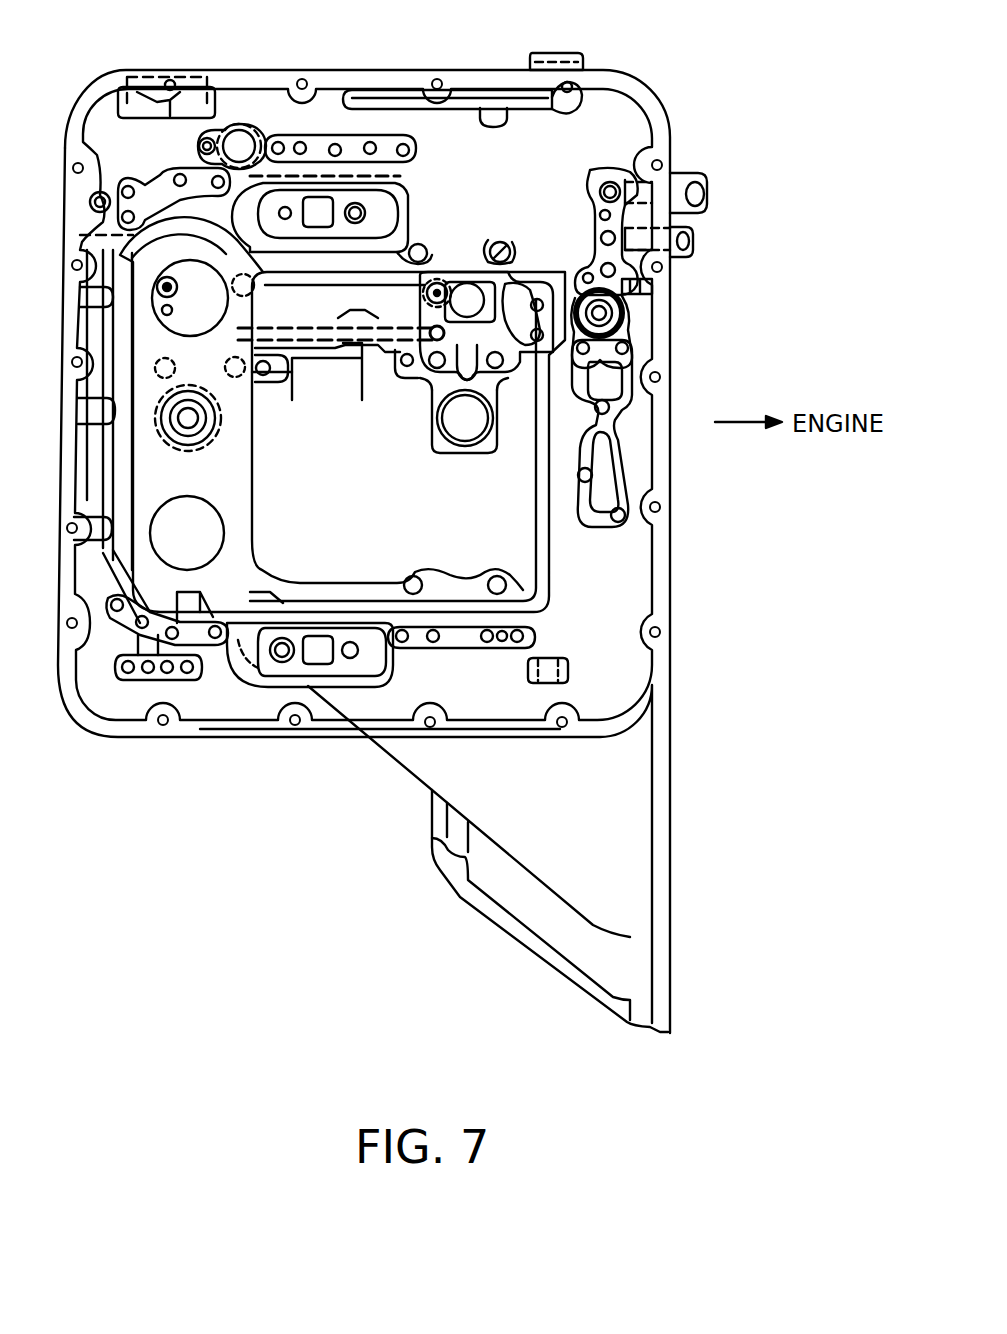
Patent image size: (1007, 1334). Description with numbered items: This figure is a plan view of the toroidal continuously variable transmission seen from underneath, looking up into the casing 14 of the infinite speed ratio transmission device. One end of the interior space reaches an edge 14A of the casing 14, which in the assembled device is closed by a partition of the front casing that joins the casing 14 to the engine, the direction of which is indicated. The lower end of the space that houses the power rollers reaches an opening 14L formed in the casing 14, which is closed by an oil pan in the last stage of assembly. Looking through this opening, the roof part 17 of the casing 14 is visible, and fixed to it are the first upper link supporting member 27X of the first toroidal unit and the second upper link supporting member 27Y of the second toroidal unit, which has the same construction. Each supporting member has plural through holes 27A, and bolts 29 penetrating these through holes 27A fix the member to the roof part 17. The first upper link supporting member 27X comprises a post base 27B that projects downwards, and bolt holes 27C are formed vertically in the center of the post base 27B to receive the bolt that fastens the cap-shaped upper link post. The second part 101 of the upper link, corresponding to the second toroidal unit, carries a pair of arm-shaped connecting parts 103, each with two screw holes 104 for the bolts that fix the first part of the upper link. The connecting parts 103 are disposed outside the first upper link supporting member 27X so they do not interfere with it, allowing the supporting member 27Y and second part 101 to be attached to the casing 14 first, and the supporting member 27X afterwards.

The casing 14 is at (100, 740).
The edge of the casing 14A is at (670, 868).
The opening 14L is at (322, 735).
The roof part 17 is at (290, 372).
The through holes 27A is at (433, 285).
The post base 27B is at (212, 437).
The bolt holes 27C is at (207, 418).
The first upper link supporting member 27X is at (478, 458).
The second upper link supporting member 27Y is at (283, 372).
The bolts 29 is at (157, 285).
The second part 101 is at (232, 575).
The connecting parts 103 is at (300, 256).
The screw holes 104 is at (356, 202).